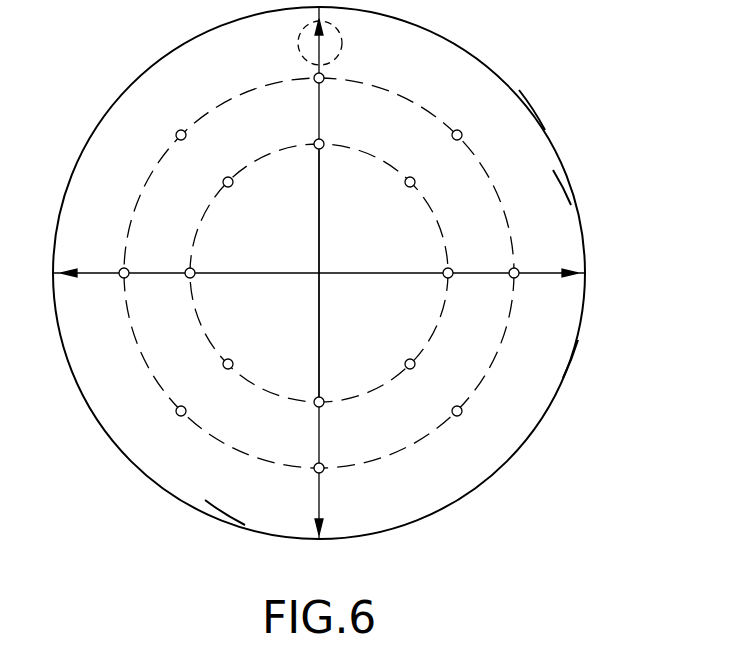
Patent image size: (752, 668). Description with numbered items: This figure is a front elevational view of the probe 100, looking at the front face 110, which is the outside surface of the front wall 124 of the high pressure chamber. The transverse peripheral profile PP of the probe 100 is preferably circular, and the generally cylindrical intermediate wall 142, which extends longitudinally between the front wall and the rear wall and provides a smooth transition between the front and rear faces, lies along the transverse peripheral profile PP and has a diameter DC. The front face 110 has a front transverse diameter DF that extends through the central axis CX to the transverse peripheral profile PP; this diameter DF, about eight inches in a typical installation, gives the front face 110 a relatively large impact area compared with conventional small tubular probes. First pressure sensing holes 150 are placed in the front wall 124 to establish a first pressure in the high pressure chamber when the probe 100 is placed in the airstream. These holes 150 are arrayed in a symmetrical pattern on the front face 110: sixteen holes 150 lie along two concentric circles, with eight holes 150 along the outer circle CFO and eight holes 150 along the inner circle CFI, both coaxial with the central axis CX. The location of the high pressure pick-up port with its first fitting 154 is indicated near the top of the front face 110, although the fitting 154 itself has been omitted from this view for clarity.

The probe 100 is at (468, 37).
The front face 110 is at (563, 187).
The front wall 124 is at (225, 513).
The intermediate wall 142 is at (573, 359).
The first pressure sensing holes 150 is at (223, 364).
The first fitting 154 is at (340, 58).
The transverse peripheral profile PP is at (531, 111).
The central axis CX is at (321, 272).
The front transverse diameter DF is at (411, 279).
The diameter of intermediate wall DC is at (318, 354).
The inner circle CFI is at (360, 393).
The outer circle CFO is at (375, 460).